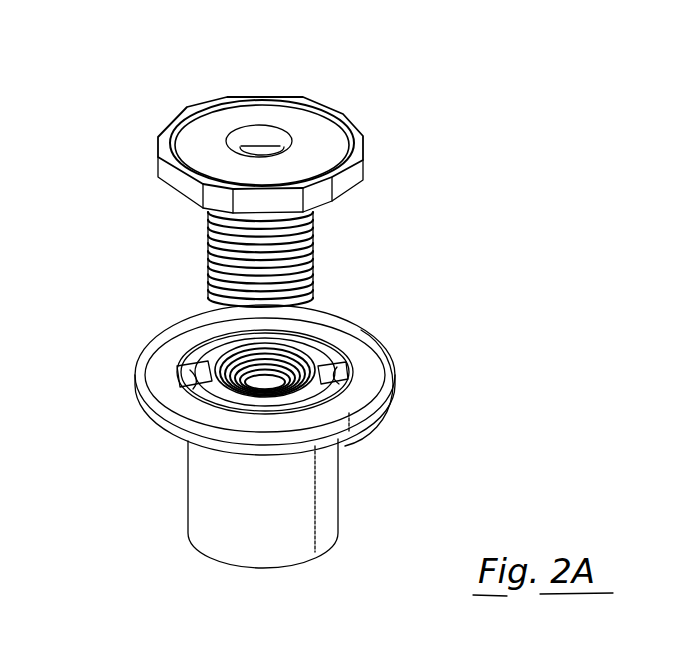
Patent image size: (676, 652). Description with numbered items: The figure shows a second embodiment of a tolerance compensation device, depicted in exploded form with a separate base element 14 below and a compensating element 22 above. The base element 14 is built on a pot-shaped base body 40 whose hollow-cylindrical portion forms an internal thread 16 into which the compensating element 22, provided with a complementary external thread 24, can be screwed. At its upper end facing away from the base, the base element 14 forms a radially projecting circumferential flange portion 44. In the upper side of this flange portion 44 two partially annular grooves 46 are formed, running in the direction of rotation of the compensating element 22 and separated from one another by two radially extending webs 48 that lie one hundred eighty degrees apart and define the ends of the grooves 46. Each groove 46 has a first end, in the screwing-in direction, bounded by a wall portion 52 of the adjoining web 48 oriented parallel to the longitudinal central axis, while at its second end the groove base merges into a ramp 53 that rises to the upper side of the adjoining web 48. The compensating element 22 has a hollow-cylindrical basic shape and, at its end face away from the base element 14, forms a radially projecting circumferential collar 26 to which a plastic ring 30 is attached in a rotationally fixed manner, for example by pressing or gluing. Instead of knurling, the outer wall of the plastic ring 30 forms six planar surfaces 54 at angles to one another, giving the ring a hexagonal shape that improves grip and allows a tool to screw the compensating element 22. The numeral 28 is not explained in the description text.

The base element 14 is at (155, 532).
The internal thread 16 is at (230, 358).
The compensating element 22 is at (140, 111).
The external thread 24 is at (313, 242).
The collar 26 is at (250, 120).
The raised disc face 28 is at (308, 132).
The plastic ring 30 is at (356, 134).
The base body 40 is at (340, 498).
The flange portion 44 is at (383, 381).
The grooves 46 is at (207, 394).
The webs 48 is at (345, 366).
The wall portion 52 is at (322, 398).
The ramp 53 is at (333, 357).
The planar surfaces 54 is at (349, 165).